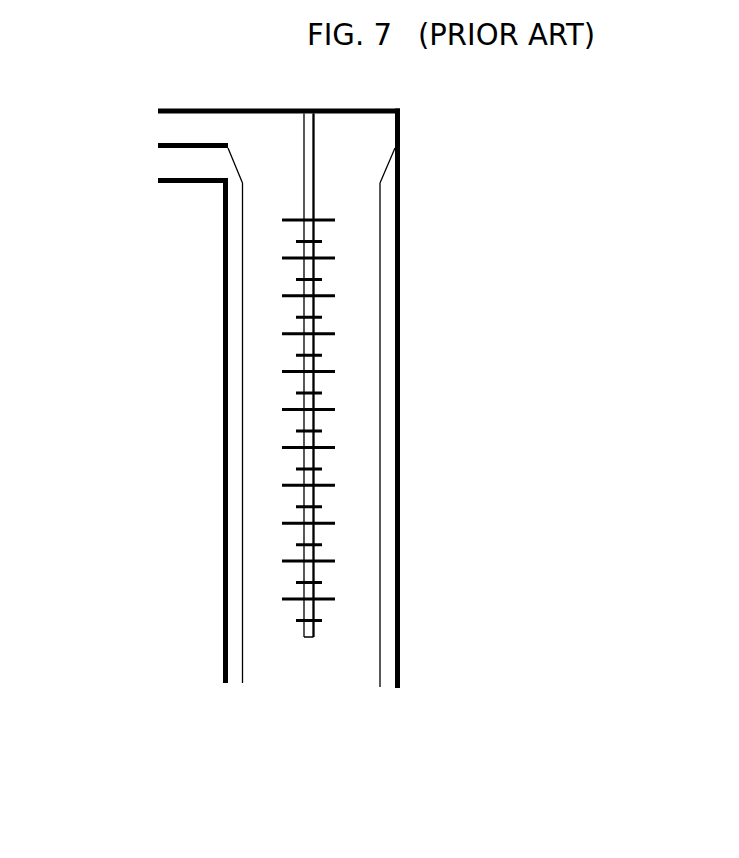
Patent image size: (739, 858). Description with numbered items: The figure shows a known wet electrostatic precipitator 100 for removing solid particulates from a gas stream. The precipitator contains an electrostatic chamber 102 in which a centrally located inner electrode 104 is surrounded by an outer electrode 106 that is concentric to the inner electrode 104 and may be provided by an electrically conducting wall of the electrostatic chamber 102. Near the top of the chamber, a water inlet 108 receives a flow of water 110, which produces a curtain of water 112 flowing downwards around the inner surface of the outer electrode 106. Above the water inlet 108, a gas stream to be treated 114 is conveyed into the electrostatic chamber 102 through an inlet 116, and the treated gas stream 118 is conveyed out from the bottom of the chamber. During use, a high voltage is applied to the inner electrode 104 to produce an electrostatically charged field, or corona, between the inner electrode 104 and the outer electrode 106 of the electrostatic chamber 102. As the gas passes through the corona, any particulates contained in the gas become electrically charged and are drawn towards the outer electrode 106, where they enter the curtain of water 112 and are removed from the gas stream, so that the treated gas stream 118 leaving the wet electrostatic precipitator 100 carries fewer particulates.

The wet electrostatic precipitator 100 is at (170, 424).
The electrostatic chamber 102 is at (360, 313).
The inner electrode 104 is at (308, 440).
The outer electrode 106 is at (225, 332).
The water inlet 108 is at (175, 183).
The flow of water 110 is at (168, 164).
The curtain of water 112 is at (232, 530).
The gas stream to be treated 114 is at (168, 128).
The inlet 116 is at (202, 143).
The treated gas stream 118 is at (307, 670).